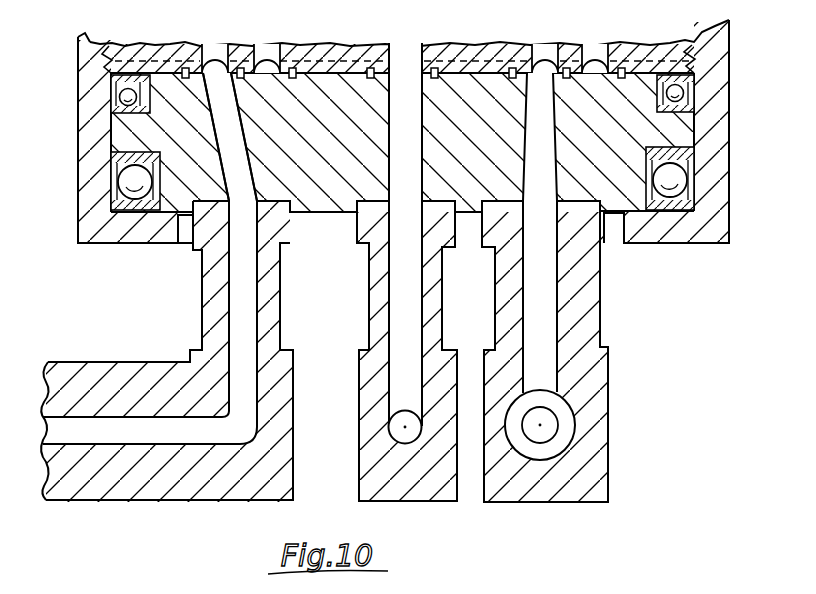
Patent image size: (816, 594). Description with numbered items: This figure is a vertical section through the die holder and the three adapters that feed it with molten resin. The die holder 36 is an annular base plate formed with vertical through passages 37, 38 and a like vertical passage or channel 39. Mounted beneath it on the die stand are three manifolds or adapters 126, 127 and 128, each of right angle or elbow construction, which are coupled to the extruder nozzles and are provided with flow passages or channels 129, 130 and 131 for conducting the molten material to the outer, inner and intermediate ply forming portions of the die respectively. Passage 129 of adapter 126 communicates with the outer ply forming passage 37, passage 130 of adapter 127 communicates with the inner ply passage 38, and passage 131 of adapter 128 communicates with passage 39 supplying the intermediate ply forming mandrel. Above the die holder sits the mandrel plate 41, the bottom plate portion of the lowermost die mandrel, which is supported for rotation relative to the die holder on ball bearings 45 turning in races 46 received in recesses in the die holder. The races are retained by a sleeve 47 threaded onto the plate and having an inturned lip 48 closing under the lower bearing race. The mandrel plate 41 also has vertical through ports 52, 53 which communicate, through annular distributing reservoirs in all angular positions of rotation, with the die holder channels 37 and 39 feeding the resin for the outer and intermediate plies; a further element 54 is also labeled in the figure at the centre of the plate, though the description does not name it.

The die holder 36 is at (125, 133).
The vertical through passage 37 is at (233, 140).
The vertical through passage 38 is at (394, 147).
The vertical through passage 39 is at (535, 150).
The mandrel plate 41 is at (468, 44).
The ball bearings 45 is at (117, 100).
The races 46 is at (113, 163).
The sleeve 47 is at (715, 165).
The inturned lip 48 is at (115, 240).
The vertical through port 52 is at (207, 44).
The vertical through port 53 is at (267, 44).
The center screw 54 is at (414, 44).
The adapter 126 is at (103, 491).
The adapter 127 is at (437, 491).
The adapter 128 is at (587, 438).
The flow passage 129 is at (238, 303).
The flow passage 130 is at (400, 307).
The flow passage 131 is at (548, 297).